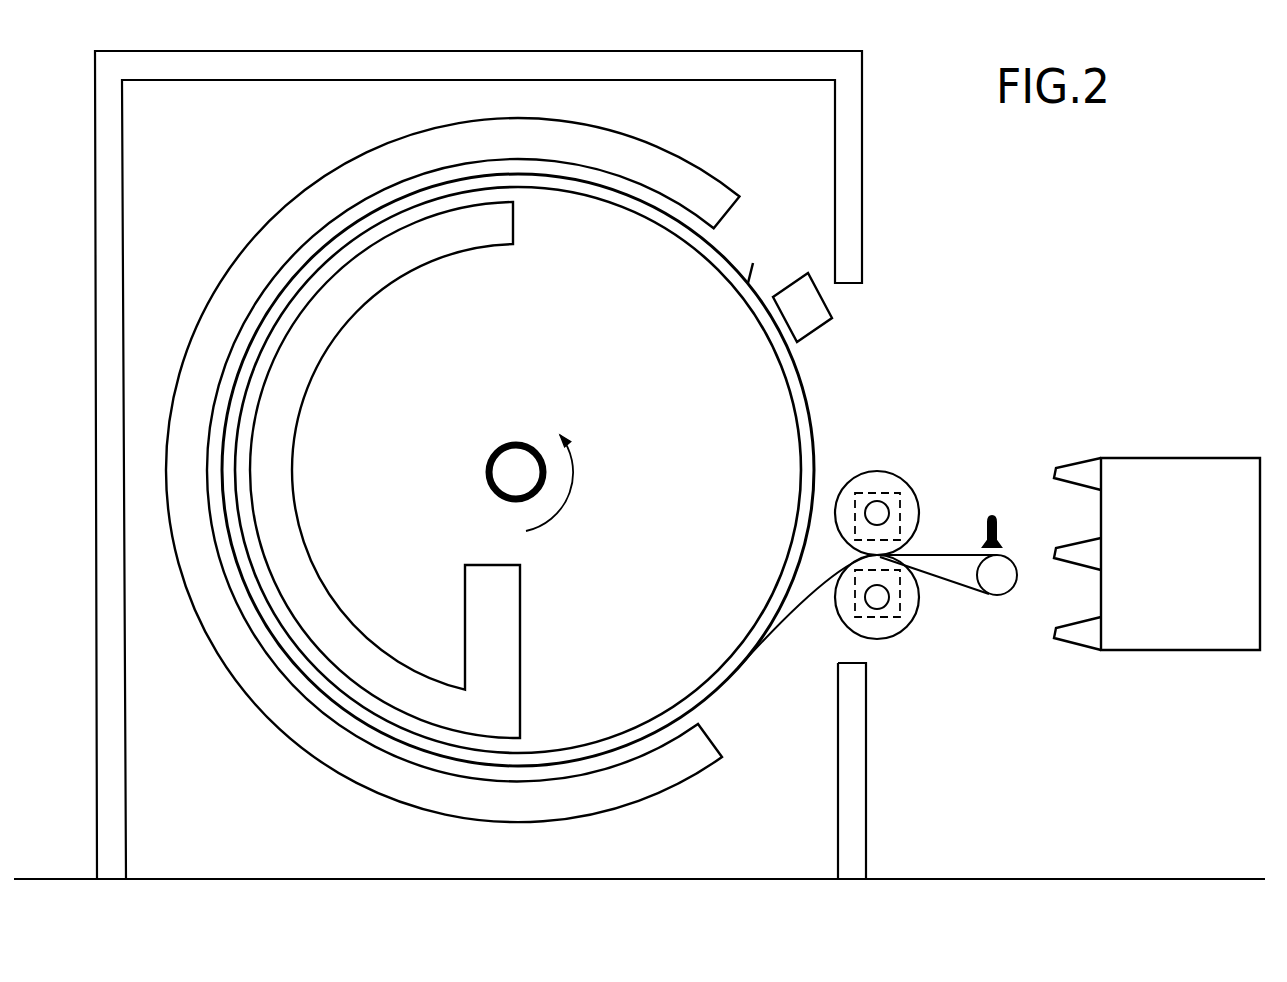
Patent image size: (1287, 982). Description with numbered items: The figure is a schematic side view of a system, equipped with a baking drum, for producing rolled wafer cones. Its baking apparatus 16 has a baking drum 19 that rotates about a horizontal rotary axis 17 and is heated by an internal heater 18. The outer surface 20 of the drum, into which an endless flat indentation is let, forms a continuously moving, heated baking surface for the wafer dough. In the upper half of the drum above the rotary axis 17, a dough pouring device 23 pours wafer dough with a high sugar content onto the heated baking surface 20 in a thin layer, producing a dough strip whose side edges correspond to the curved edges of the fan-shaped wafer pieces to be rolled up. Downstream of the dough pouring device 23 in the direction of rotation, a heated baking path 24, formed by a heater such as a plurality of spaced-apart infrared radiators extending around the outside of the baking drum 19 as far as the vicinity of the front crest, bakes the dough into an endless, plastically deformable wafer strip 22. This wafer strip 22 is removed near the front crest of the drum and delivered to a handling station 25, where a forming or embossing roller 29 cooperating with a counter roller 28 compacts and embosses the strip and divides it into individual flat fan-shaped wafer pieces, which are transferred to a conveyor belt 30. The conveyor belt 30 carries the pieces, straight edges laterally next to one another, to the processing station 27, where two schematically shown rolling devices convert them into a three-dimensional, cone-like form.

The baking apparatus 16 is at (552, 58).
The rotary axis 17 is at (515, 450).
The internal heater 18 is at (501, 233).
The baking drum 19 is at (802, 424).
The outer surface 20 is at (823, 457).
The wafer strip 22 is at (807, 592).
The dough pouring device 23 is at (818, 391).
The heated baking path 24 is at (686, 163).
The handling station 25 is at (885, 445).
The processing station 27 is at (1065, 428).
The counter roller 28 is at (905, 627).
The forming or embossing roller 29 is at (907, 498).
The conveyor belt 30 is at (955, 553).